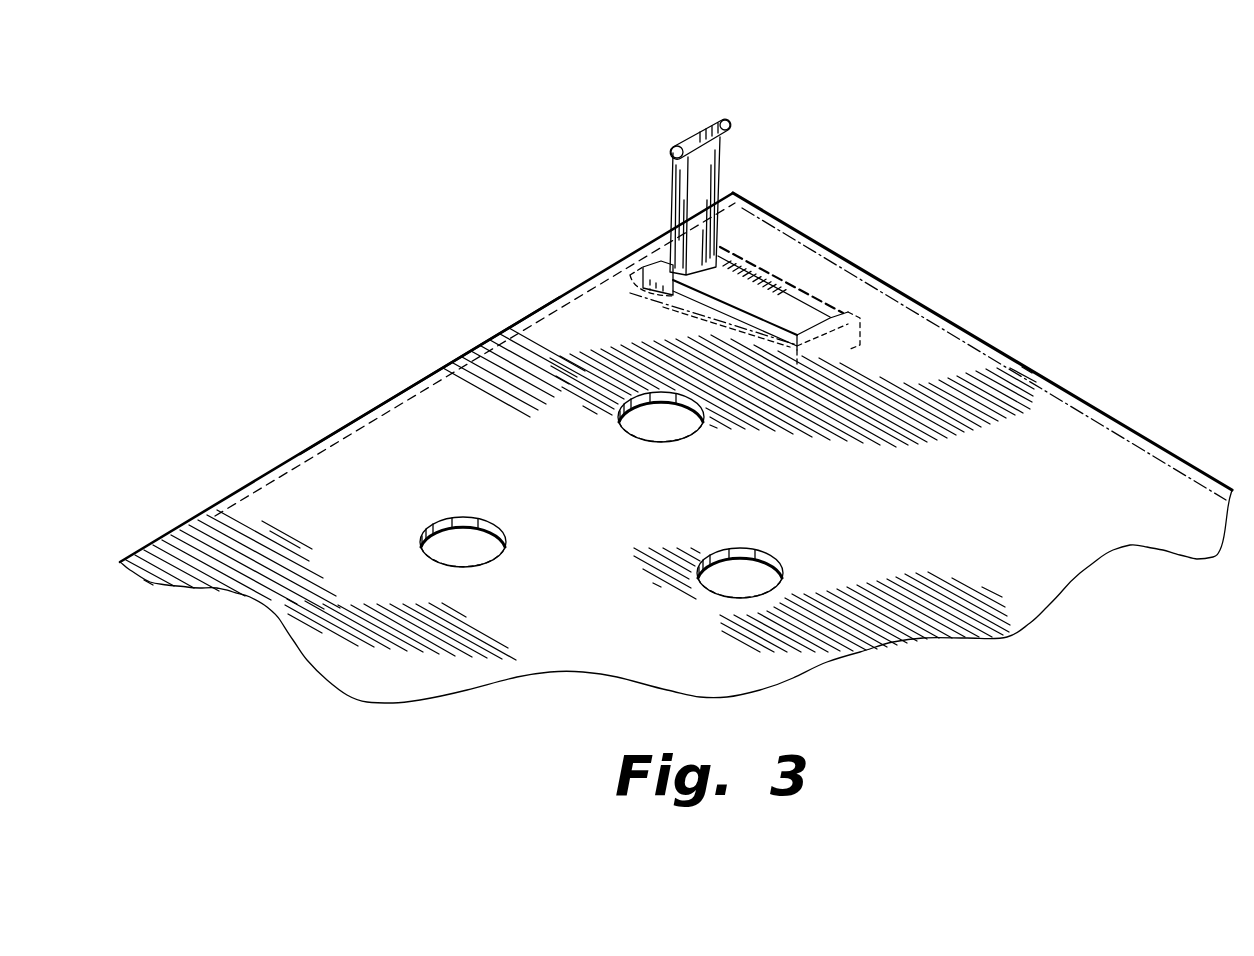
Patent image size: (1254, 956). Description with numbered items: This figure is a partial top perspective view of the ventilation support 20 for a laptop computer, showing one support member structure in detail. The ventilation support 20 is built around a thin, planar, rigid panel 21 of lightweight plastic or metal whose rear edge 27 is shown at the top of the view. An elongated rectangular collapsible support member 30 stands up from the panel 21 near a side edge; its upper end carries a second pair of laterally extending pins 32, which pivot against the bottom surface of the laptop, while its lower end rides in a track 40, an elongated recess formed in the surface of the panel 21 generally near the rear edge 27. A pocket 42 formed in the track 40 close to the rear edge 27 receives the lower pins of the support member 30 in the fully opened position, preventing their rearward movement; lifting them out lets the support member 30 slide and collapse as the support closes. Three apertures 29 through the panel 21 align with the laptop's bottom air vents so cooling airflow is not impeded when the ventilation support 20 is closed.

The ventilation support 20 is at (1102, 397).
The panel 21 is at (798, 502).
The rear edge 27 is at (408, 388).
The apertures 29 is at (719, 552).
The collapsible support member 30 is at (755, 153).
The second pair of laterally extending pins 32 is at (729, 119).
The track 40 is at (841, 313).
The pocket 42 is at (645, 284).